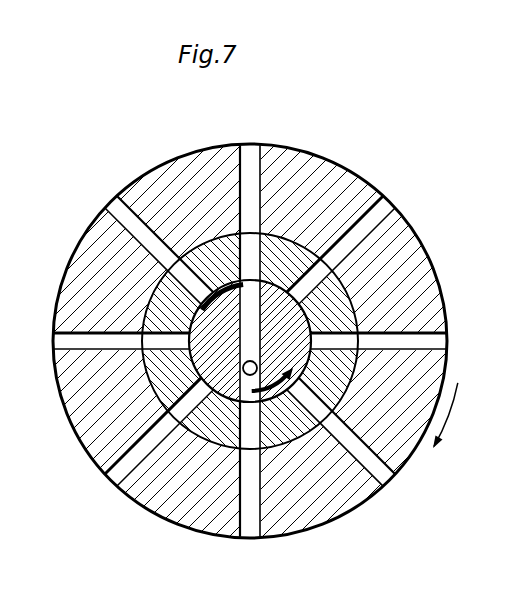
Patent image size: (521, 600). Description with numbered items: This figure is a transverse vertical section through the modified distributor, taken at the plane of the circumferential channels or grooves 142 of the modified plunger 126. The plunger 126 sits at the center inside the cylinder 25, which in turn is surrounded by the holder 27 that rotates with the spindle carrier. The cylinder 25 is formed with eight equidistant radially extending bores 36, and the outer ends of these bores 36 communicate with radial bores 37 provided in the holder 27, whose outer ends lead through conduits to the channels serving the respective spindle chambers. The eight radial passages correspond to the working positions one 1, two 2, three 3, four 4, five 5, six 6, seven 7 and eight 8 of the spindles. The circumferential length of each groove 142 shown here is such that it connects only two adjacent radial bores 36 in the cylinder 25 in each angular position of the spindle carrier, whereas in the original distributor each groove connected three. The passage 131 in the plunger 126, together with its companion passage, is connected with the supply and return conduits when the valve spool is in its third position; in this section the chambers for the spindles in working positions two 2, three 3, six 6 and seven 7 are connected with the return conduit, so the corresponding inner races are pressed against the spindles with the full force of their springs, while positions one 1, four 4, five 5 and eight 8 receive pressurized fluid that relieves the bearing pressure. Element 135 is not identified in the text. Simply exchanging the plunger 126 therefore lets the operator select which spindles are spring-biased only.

The working position one 1 is at (451, 355).
The working position two 2 is at (393, 500).
The working position three 3 is at (241, 568).
The working position four 4 is at (88, 503).
The working position five 5 is at (27, 353).
The working position six 6 is at (89, 200).
The working position seven 7 is at (241, 142).
The working position eight 8 is at (396, 199).
The cylinder 25 is at (185, 372).
The holder 27 is at (100, 448).
The radial bores 36 is at (313, 278).
The radial bores 37 is at (367, 227).
The plunger 126 is at (187, 354).
The passage 131 is at (258, 367).
The rotor 135 is at (257, 325).
The circumferentially extending channels or grooves 142 is at (222, 285).